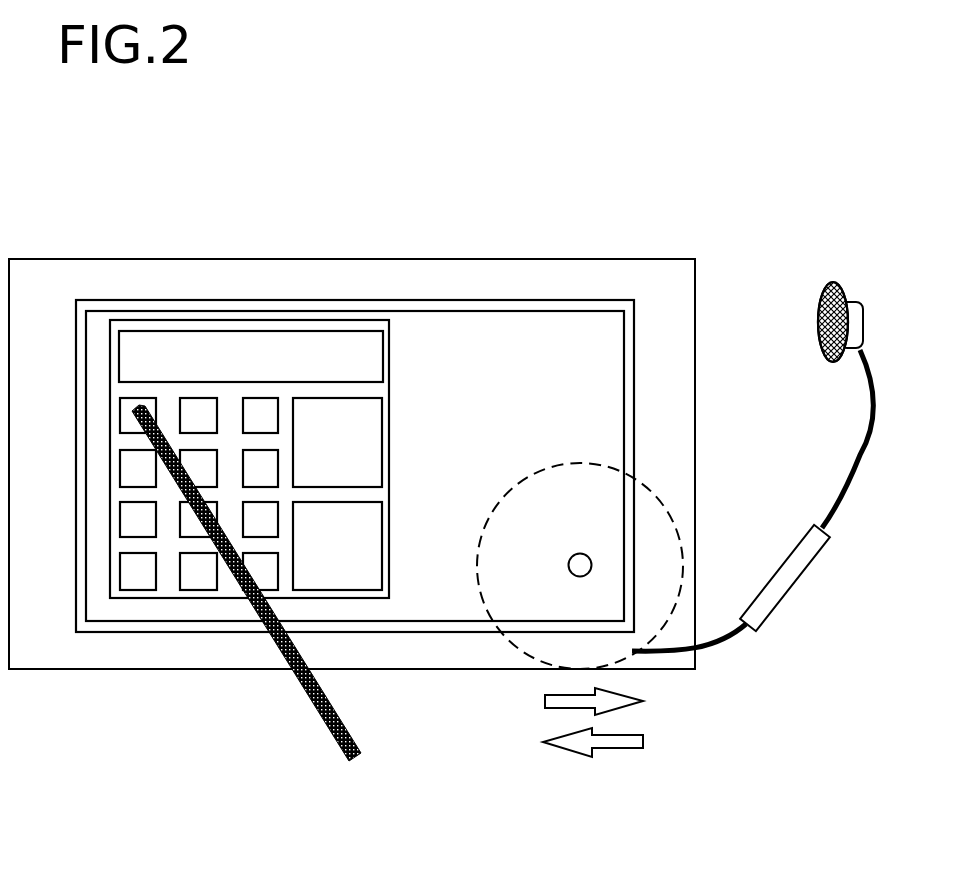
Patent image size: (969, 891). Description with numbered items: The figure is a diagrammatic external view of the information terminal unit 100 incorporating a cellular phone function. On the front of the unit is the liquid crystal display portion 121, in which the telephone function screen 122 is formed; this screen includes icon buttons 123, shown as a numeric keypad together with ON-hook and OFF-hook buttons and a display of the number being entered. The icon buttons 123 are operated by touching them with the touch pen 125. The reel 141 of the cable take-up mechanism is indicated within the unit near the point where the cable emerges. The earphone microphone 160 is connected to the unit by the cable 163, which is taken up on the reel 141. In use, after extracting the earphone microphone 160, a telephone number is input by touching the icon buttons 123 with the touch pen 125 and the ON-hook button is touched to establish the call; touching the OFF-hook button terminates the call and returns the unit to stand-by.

The information terminal unit 100 is at (80, 259).
The liquid crystal display portion 121 is at (512, 301).
The phone function screen 122 is at (246, 455).
The icon button 123 is at (190, 592).
The touch pen 125 is at (320, 710).
The reel 141 is at (513, 642).
The earphone microphone 160 is at (821, 290).
The cable 163 is at (723, 645).